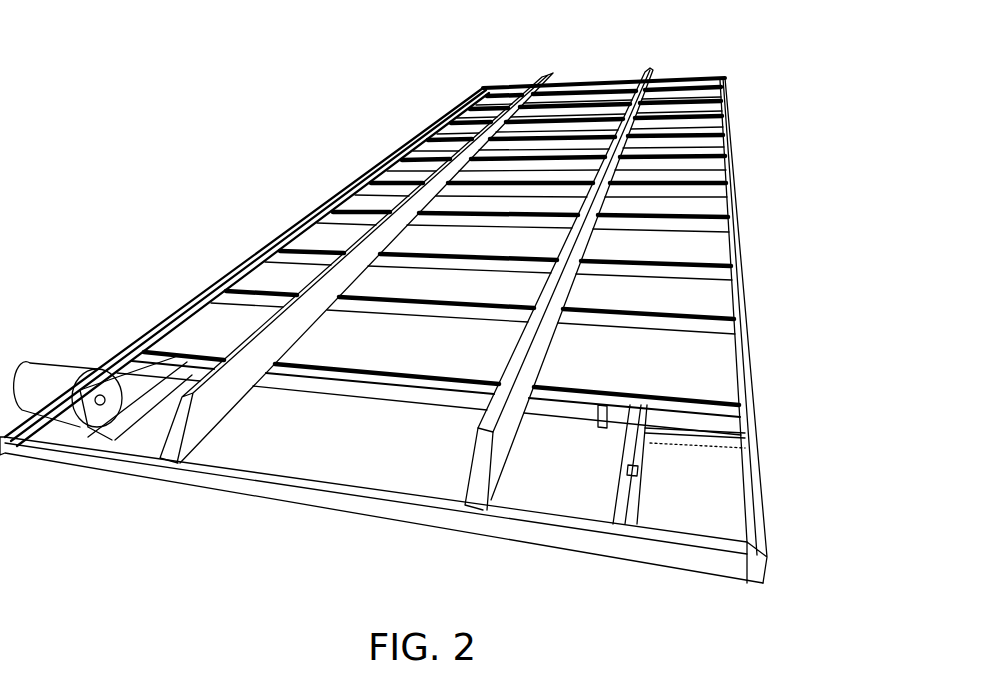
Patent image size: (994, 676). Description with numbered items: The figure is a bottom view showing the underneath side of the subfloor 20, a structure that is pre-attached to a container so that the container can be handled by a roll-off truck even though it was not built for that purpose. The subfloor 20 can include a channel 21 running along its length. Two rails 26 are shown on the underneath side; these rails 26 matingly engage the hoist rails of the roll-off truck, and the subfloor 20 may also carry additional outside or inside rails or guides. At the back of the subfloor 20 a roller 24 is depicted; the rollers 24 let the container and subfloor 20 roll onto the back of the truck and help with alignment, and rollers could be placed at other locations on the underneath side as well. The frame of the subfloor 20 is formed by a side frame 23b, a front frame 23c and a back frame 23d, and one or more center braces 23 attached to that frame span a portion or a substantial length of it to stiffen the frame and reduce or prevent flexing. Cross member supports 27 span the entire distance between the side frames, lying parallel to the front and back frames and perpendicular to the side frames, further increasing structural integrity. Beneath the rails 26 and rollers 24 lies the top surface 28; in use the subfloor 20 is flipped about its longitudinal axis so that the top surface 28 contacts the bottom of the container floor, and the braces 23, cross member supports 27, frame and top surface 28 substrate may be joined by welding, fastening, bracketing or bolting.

The subfloor 20 is at (212, 265).
The channel 21 is at (605, 86).
The center braces 23 is at (733, 157).
The side frame 23b is at (740, 305).
The front frame 23c is at (500, 87).
The back frame 23d is at (203, 478).
The rollers 24 is at (712, 480).
The rails 26 is at (478, 485).
The cross member supports 27 is at (560, 414).
The top surface 28 is at (695, 378).